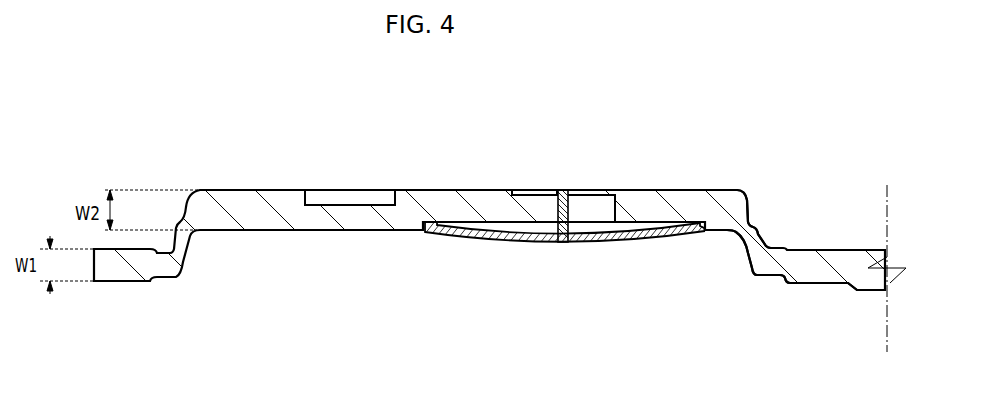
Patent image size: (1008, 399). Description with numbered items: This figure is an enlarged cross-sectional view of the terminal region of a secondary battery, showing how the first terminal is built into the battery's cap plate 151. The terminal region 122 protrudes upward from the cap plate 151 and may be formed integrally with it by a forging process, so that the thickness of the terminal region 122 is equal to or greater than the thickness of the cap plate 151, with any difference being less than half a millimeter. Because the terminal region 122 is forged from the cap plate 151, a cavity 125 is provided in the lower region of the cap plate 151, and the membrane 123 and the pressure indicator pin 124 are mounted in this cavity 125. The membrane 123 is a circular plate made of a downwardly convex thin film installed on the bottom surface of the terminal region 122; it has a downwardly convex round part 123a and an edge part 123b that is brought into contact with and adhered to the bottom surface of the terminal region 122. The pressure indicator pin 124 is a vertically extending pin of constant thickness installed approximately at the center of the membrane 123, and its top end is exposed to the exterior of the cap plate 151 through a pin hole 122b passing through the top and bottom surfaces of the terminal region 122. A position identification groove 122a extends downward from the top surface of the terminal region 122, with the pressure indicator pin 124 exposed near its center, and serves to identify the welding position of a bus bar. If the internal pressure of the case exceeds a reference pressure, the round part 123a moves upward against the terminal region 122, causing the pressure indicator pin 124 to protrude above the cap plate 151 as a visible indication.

The terminal region 122 is at (275, 195).
The position identification groove 122a is at (530, 192).
The pin hole 122b is at (568, 192).
The membrane 123 is at (574, 298).
The round part 123a is at (604, 244).
The edge part 123b is at (698, 231).
The pressure indicator pin 124 is at (572, 240).
The cavity 125 is at (748, 252).
The cap plate 151 is at (811, 247).